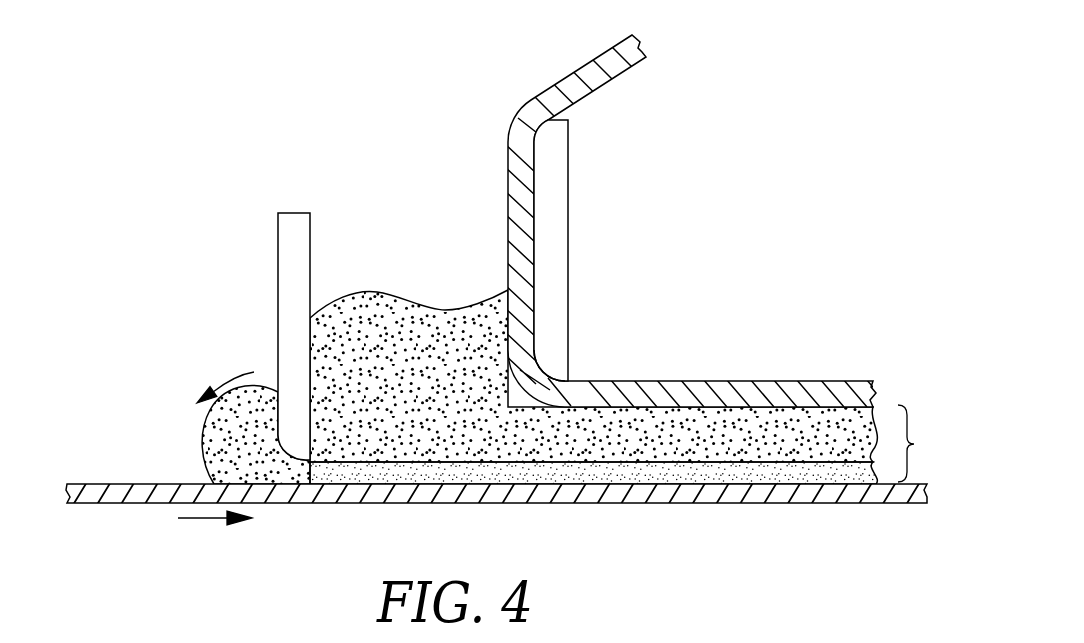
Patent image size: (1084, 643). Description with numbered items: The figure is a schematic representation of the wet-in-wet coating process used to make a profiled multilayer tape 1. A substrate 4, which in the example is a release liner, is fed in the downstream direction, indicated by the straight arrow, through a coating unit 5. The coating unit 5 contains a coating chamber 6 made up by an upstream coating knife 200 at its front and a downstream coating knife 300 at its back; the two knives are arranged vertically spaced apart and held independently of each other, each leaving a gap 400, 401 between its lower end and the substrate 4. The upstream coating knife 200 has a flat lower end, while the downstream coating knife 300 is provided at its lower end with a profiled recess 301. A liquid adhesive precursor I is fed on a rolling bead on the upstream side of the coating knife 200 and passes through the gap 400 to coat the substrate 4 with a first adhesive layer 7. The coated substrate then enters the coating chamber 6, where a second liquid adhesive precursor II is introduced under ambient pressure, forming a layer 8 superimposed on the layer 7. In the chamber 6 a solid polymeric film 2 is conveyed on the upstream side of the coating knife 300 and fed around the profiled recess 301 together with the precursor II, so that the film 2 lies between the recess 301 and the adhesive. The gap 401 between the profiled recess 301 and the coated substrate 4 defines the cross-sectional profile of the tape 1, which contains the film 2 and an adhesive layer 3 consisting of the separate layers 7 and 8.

The profiled tape 1 is at (897, 347).
The extruded polymeric film 2 is at (600, 78).
The adhesive layer 3 is at (915, 443).
The substrate 4 is at (125, 484).
The coating unit 5 is at (193, 178).
The coating chamber 6 is at (593, 351).
The first adhesive layer 7 is at (791, 470).
The second adhesive layer 8 is at (780, 437).
The upstream coating knife 200 is at (278, 288).
The downstream coating knife 300 is at (570, 180).
The profiled recess 301 is at (587, 367).
The gap 400 is at (303, 465).
The gap 401 is at (556, 430).
The liquid adhesive precursor I is at (237, 443).
The second liquid adhesive precursor II is at (360, 312).